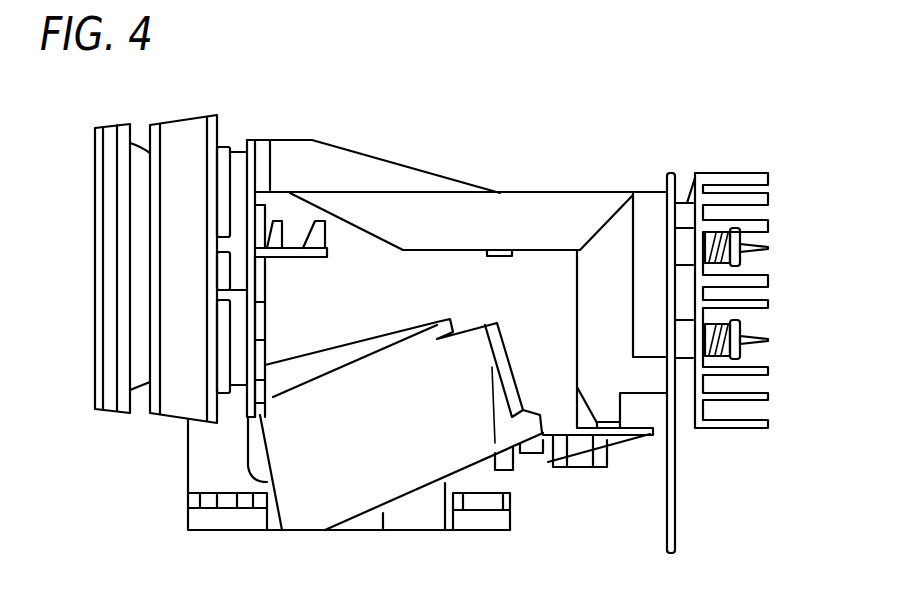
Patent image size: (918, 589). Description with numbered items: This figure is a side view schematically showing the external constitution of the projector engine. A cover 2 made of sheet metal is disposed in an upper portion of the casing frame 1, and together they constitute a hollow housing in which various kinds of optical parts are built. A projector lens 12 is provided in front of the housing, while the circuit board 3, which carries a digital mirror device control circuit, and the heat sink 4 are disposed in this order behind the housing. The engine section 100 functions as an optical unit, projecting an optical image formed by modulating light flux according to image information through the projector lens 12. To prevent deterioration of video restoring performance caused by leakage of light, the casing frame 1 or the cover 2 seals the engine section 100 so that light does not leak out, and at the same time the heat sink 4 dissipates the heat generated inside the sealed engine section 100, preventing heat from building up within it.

The engine section 100 is at (503, 150).
The casing frame 1 is at (563, 423).
The cover 2 is at (563, 193).
The circuit board 3 is at (674, 517).
The heat sink 4 is at (740, 429).
The projector lens 12 is at (173, 418).